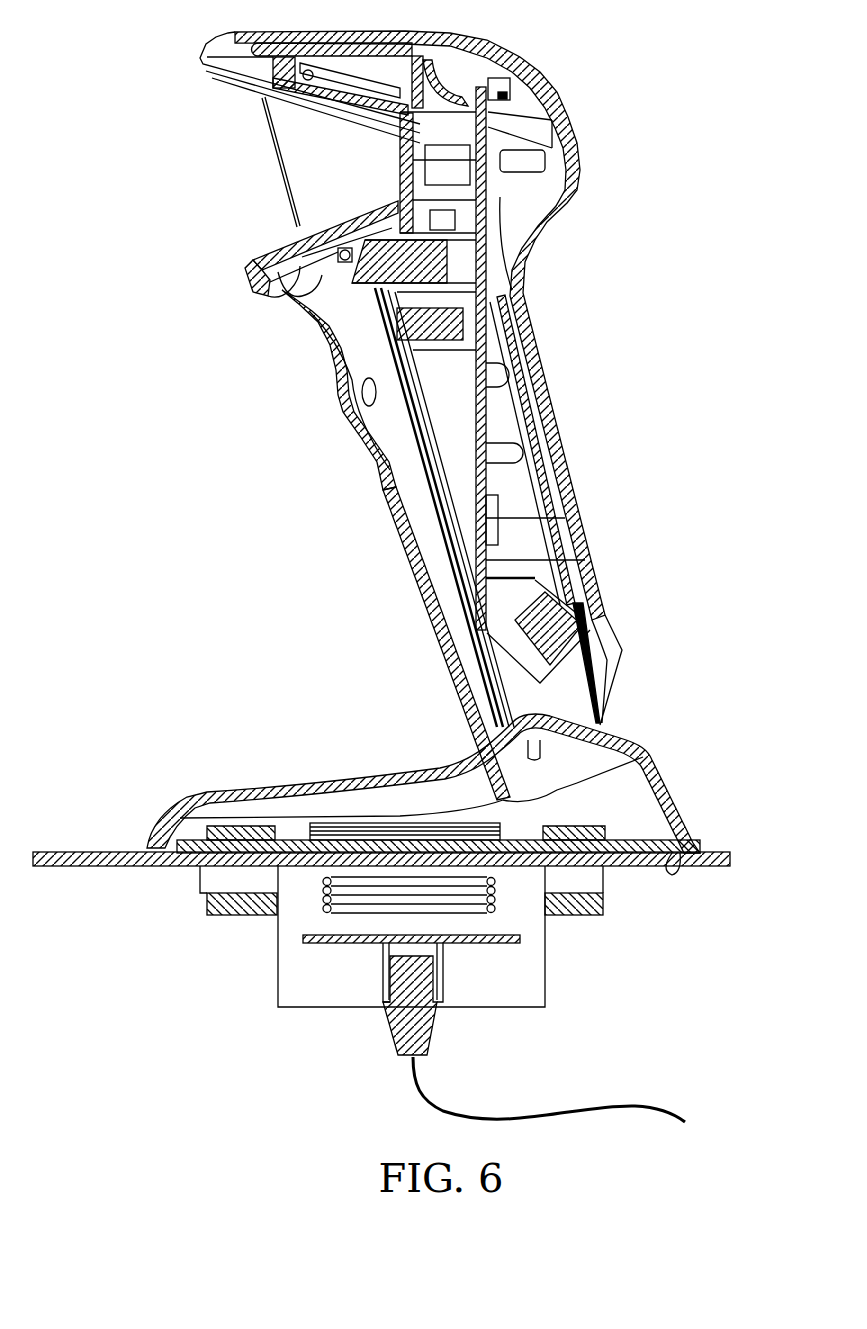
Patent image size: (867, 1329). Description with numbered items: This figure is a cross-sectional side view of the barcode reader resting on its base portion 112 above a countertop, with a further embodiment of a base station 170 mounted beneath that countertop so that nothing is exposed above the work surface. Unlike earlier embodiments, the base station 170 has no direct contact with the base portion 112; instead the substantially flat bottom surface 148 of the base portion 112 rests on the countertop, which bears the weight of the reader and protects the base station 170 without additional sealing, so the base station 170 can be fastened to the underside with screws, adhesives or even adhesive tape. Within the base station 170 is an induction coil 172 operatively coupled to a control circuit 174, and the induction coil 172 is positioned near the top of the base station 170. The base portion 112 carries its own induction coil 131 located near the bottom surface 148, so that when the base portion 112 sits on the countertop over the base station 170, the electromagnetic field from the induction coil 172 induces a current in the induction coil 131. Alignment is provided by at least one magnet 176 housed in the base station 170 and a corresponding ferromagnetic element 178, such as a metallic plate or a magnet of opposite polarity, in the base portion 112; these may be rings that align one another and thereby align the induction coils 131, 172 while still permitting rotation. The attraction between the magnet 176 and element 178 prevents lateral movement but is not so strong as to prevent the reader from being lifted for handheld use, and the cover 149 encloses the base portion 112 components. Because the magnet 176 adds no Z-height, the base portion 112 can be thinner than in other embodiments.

The base portion 112 is at (628, 738).
The induction coil 131 is at (398, 826).
The bottom surface 148 is at (667, 852).
The base cover 149 is at (250, 792).
The base station 170 is at (527, 1008).
The induction coil 172 is at (348, 910).
The control circuit 174 is at (447, 947).
The magnet 176 is at (240, 908).
The corresponding element 178 is at (207, 828).